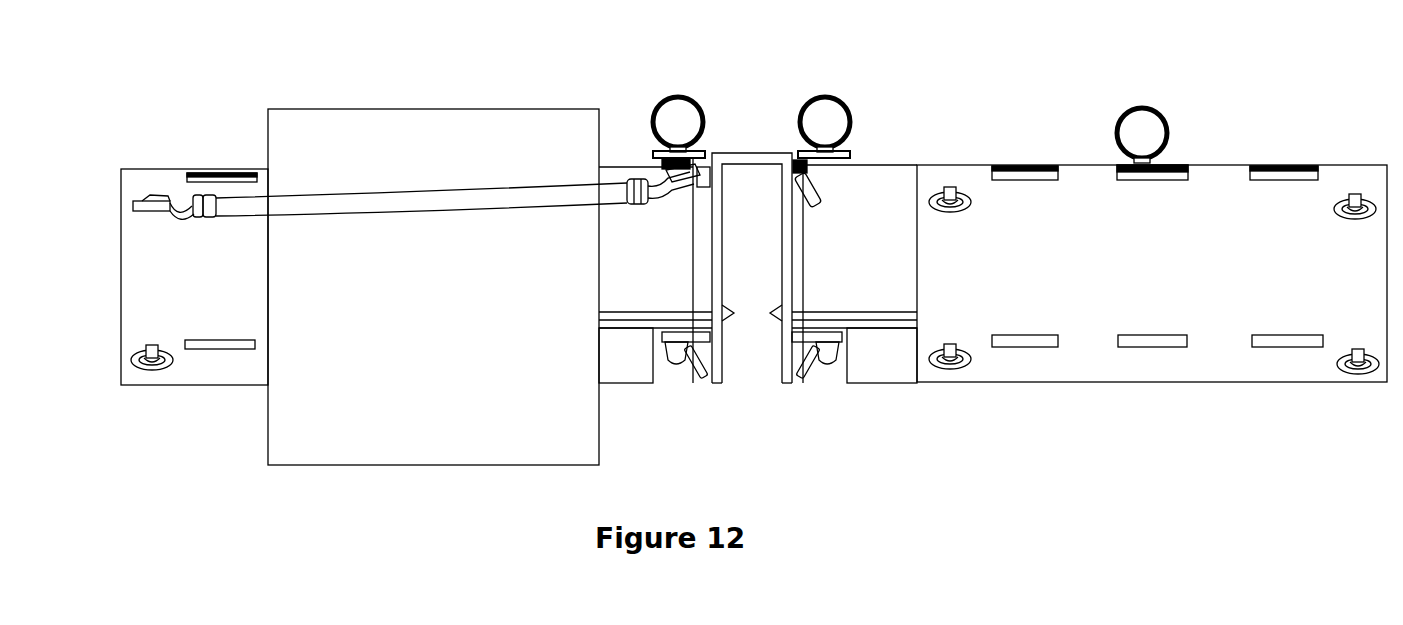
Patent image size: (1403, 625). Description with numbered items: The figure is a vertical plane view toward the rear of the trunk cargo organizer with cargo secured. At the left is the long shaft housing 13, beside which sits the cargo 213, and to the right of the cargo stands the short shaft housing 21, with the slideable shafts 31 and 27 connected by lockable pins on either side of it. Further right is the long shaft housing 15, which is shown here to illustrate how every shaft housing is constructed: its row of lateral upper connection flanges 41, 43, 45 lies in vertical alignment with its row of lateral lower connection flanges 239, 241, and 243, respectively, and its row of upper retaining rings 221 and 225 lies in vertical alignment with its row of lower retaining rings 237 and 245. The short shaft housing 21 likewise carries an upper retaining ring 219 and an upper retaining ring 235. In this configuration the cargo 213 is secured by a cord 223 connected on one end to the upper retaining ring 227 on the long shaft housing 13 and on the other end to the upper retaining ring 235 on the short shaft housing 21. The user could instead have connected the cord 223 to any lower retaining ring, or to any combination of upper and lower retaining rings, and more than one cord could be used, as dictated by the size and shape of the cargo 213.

The long shaft housing 13 is at (205, 291).
The long shaft housing 15 is at (1166, 280).
The short shaft housing 21 is at (717, 383).
The slideable shaft 27 is at (876, 250).
The slideable shaft 31 is at (657, 264).
The lateral upper connection flange 41 is at (983, 173).
The lateral upper connection flange 43 is at (1117, 174).
The lateral upper connection flange 45 is at (1245, 175).
The cargo 213 is at (452, 323).
The first upper retaining ring on third short shaft housing 219 is at (818, 197).
The first upper retaining ring on third long shaft housing 221 is at (933, 198).
The cord 223 is at (360, 193).
The second upper retaining ring on third long shaft housing 225 is at (1343, 208).
The first upper retaining ring on second long shaft housing 227 is at (133, 197).
The second upper retaining ring on third short shaft housing 235 is at (697, 153).
The first lower retaining ring on third long shaft housing 237 is at (942, 357).
The first lower slideable shaft connector on third long shaft housing 239 is at (1026, 347).
The second lower slideable shaft connector on third long shaft housing 241 is at (1152, 347).
The third lower slideable shaft connector on third long shaft housing 243 is at (1278, 347).
The second lower retaining ring on third long shaft housing 245 is at (1358, 376).